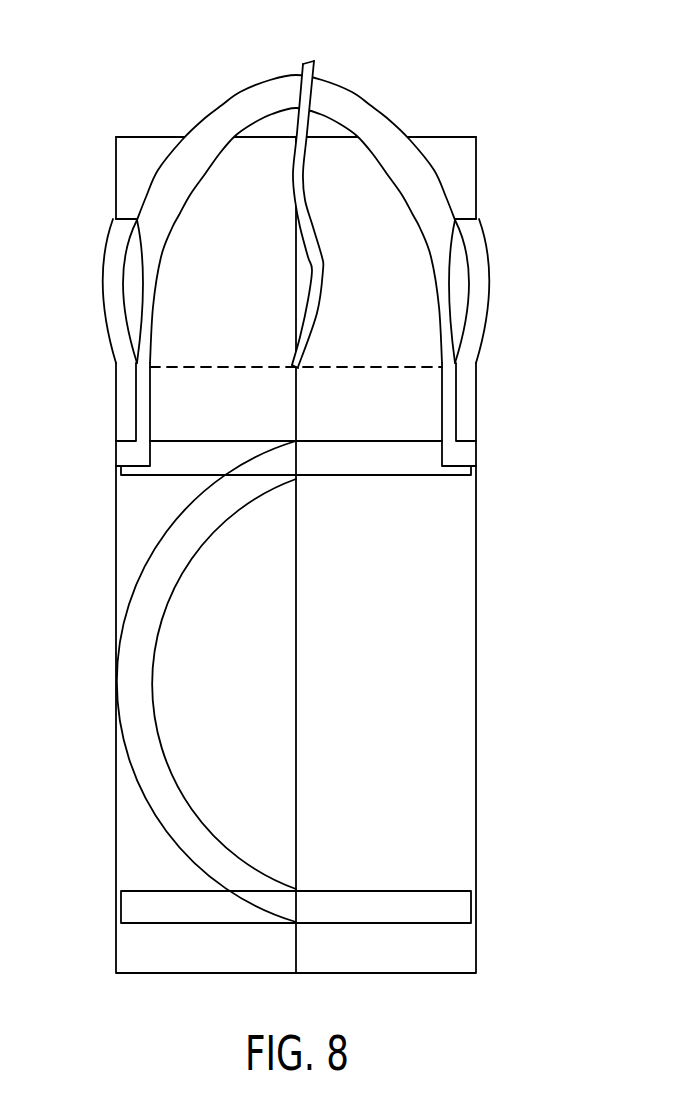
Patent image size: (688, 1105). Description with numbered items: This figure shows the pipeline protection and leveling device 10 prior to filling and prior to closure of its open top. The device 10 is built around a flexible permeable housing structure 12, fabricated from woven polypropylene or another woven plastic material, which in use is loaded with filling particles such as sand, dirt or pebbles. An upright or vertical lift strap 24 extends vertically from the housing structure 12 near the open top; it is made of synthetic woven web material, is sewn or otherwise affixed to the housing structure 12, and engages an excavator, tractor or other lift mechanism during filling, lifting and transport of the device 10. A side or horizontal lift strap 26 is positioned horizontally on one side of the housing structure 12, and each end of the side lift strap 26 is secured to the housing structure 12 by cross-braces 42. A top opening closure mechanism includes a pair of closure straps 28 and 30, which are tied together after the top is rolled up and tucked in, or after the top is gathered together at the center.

The pipeline protection and leveling device 10 is at (321, 486).
The flexible permeable housing structure 12 is at (455, 620).
The upright or vertical lift strap 24 is at (350, 103).
The side or horizontal lift strap 26 is at (125, 683).
The closure strap 28 is at (117, 235).
The closure strap 30 is at (308, 63).
The cross-braces 42 is at (380, 465).